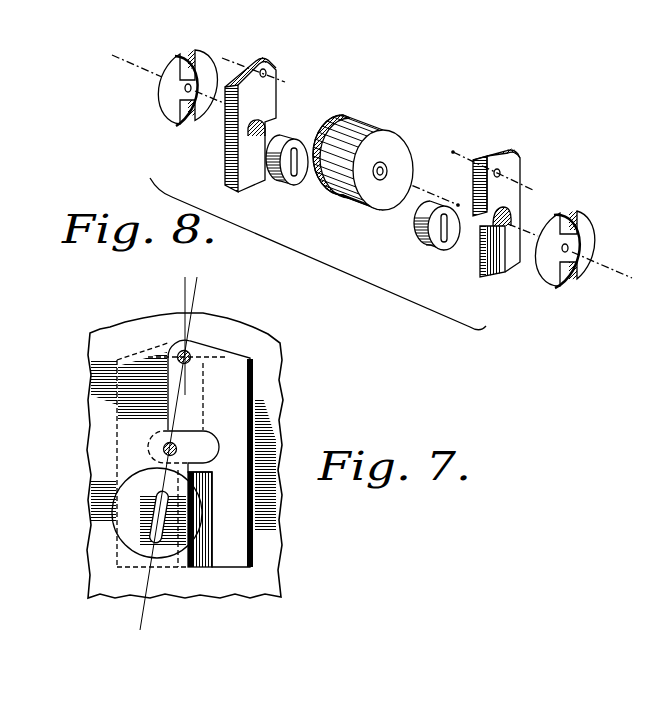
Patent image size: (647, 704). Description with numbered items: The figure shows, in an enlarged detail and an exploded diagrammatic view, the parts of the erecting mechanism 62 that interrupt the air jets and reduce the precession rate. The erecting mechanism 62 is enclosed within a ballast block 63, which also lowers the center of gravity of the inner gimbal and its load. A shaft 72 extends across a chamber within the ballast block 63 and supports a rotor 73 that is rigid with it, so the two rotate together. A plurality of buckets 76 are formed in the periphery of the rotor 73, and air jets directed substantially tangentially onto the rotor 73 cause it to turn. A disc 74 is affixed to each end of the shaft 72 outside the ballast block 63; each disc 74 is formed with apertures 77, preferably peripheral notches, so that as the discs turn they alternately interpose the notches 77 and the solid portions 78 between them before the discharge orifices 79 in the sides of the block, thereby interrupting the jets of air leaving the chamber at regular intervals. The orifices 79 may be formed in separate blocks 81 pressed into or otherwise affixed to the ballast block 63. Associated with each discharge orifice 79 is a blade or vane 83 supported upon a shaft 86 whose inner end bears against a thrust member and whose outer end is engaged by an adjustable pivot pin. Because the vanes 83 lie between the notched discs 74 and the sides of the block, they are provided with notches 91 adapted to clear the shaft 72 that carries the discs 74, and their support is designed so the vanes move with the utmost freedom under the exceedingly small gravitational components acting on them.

In FIG. 8, the erecting mechanism 62 is at (442, 132).
In FIG. 7, the erecting mechanism 62 is at (282, 407).
In FIG. 7, the ballast block 63 is at (97, 342).
In FIG. 7, the shaft 72 is at (162, 451).
In FIG. 8, the rotor 73 is at (359, 160).
In FIG. 8, the disc 74 is at (167, 98).
In FIG. 8, the buckets 76 is at (337, 175).
In FIG. 8, the apertures 77 is at (192, 52).
In FIG. 8, the solid portions 78 is at (217, 60).
In FIG. 8, the discharge orifices 79 is at (294, 149).
In FIG. 7, the discharge orifices 79 is at (152, 544).
In FIG. 8, the separate blocks 81 is at (288, 183).
In FIG. 7, the separate blocks 81 is at (128, 530).
In FIG. 8, the vane 83 is at (247, 115).
In FIG. 7, the vane 83 is at (233, 390).
In FIG. 7, the shaft 86 is at (190, 352).
In FIG. 8, the notches 91 is at (250, 133).
In FIG. 7, the notches 91 is at (220, 447).